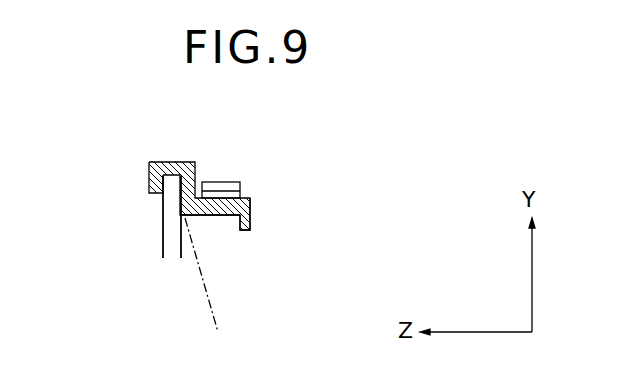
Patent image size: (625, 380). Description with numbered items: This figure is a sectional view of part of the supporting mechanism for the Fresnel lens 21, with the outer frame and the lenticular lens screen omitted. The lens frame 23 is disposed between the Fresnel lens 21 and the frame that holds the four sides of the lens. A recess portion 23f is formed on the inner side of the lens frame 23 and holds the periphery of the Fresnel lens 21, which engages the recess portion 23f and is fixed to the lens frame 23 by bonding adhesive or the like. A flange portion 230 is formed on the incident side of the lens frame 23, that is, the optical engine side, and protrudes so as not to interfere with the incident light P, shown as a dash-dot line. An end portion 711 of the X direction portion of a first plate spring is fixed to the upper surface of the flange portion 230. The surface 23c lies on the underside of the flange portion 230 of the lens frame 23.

The Fresnel lens 21 is at (174, 225).
The lens frame 23 is at (182, 162).
The recess portion 23f is at (168, 162).
The contact surface of holding member 23c is at (218, 216).
The flange portion 230 is at (250, 209).
The end portion of X direction portion 711 is at (240, 194).
The incident light P is at (205, 287).